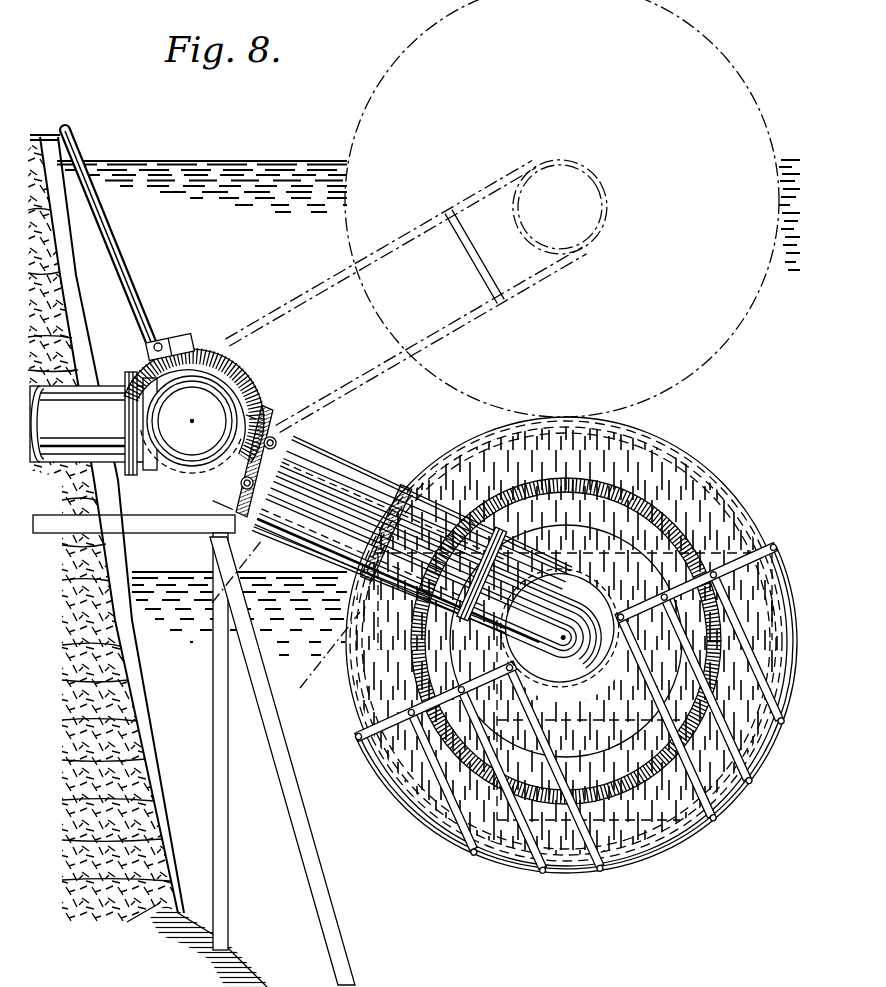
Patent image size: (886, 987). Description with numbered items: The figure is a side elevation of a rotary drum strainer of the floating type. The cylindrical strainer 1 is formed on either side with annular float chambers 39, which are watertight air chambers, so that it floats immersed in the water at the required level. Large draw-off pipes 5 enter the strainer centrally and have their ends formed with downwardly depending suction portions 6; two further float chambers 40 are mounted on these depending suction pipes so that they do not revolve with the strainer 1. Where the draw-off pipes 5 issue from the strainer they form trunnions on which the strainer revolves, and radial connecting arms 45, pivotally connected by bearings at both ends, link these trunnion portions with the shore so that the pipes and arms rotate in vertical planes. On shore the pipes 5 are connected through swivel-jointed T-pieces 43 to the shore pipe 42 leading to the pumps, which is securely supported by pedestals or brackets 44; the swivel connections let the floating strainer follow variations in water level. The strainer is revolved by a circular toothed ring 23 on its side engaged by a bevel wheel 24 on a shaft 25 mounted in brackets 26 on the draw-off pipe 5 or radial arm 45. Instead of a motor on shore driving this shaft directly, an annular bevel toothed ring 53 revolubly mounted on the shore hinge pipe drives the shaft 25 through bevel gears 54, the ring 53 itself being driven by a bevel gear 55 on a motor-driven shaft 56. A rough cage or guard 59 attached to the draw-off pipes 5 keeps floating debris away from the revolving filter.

The strainer 1 is at (748, 80).
The pipes 5 is at (322, 487).
The suction pipes 6 is at (455, 840).
The toothed ring 23 is at (632, 492).
The bevel wheel 24 is at (340, 658).
The shaft 25 is at (386, 525).
The brackets 26 is at (213, 500).
The annular float chambers 39 is at (566, 641).
The float chambers 40 is at (525, 538).
The shore pipe 42 is at (133, 423).
The T-pieces 43 is at (227, 497).
The pedestals or brackets 44 is at (190, 508).
The radial connecting arms 45 is at (300, 543).
The annular bevel toothed ring 53 is at (252, 362).
The bevel gears 54 is at (298, 384).
The bevel gear 55 is at (186, 352).
The shaft 56 is at (128, 262).
The cage or guard 59 is at (568, 870).